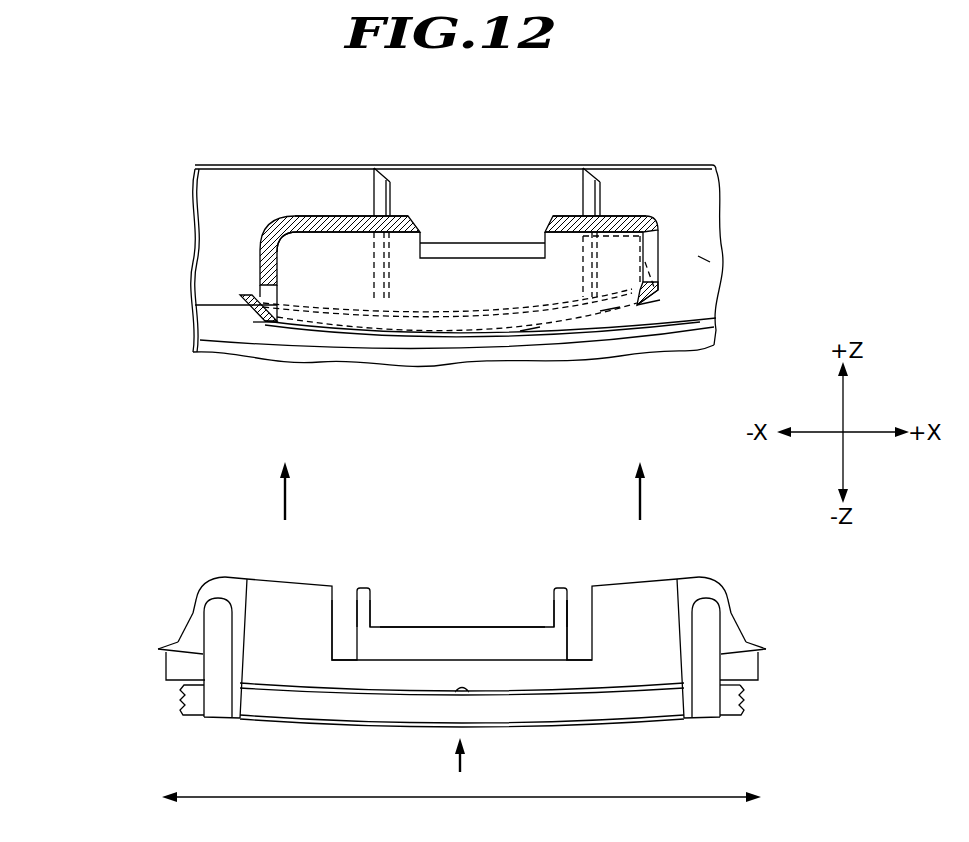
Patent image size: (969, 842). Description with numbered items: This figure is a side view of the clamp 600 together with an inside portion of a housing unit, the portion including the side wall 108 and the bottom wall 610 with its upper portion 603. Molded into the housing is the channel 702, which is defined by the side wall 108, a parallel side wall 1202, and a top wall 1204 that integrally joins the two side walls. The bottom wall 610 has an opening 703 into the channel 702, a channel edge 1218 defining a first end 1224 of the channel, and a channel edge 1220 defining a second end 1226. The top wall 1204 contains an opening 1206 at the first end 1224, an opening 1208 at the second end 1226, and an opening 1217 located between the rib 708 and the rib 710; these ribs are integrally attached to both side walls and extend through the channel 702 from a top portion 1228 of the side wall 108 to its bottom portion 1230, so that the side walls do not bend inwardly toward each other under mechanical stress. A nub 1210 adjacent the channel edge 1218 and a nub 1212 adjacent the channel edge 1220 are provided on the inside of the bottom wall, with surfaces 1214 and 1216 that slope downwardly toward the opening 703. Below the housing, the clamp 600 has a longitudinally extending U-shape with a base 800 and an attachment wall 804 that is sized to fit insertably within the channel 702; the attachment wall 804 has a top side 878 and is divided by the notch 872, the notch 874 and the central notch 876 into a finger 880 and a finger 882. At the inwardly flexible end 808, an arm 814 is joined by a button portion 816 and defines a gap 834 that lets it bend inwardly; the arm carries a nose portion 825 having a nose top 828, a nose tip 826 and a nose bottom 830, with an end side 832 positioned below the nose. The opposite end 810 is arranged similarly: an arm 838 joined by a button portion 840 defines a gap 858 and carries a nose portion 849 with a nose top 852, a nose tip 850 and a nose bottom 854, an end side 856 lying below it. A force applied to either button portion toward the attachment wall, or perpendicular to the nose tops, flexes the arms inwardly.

The side wall 108 is at (212, 188).
The top portion 1228 is at (700, 178).
The bottom wall 610 is at (200, 348).
The upper portion 603 is at (198, 305).
The opening 1206 is at (312, 250).
The side wall 1202 is at (280, 253).
The top wall 1204 is at (342, 225).
The rib 710 is at (378, 195).
The rib 708 is at (592, 200).
The opening 1217 is at (487, 250).
The opening 1208 is at (666, 255).
The surface 1216 is at (676, 268).
The bottom portion 1230 is at (698, 259).
The nub 1212 is at (658, 298).
The surface 1214 is at (252, 296).
The nub 1210 is at (250, 305).
The channel edge 1218 is at (265, 330).
The first end 1224 is at (320, 325).
The channel 702 is at (365, 312).
The opening 703 is at (445, 310).
The second end 1226 is at (530, 318).
The channel edge 1220 is at (612, 300).
The attachment wall 804 is at (310, 588).
The base 800 is at (284, 717).
The arm 838 is at (205, 590).
The arm 814 is at (705, 577).
The nose portion 849 is at (182, 630).
The nose top 852 is at (185, 643).
The nose tip 850 is at (160, 650).
The nose bottom 854 is at (165, 657).
The end side 856 is at (170, 679).
The button portion 840 is at (170, 701).
The gap 858 is at (220, 703).
The gap 834 is at (703, 703).
The nose top 828 is at (740, 625).
The nose portion 825 is at (750, 642).
The nose tip 826 is at (764, 648).
The nose bottom 830 is at (755, 665).
The end side 832 is at (755, 681).
The button portion 816 is at (755, 692).
The notch 874 is at (348, 600).
The notch 872 is at (580, 592).
The finger 882 is at (363, 600).
The finger 880 is at (566, 600).
The notch 876 is at (465, 605).
The top side 878 is at (393, 627).
The end 810 is at (114, 736).
The end 808 is at (816, 719).
The clamp 600 is at (392, 782).